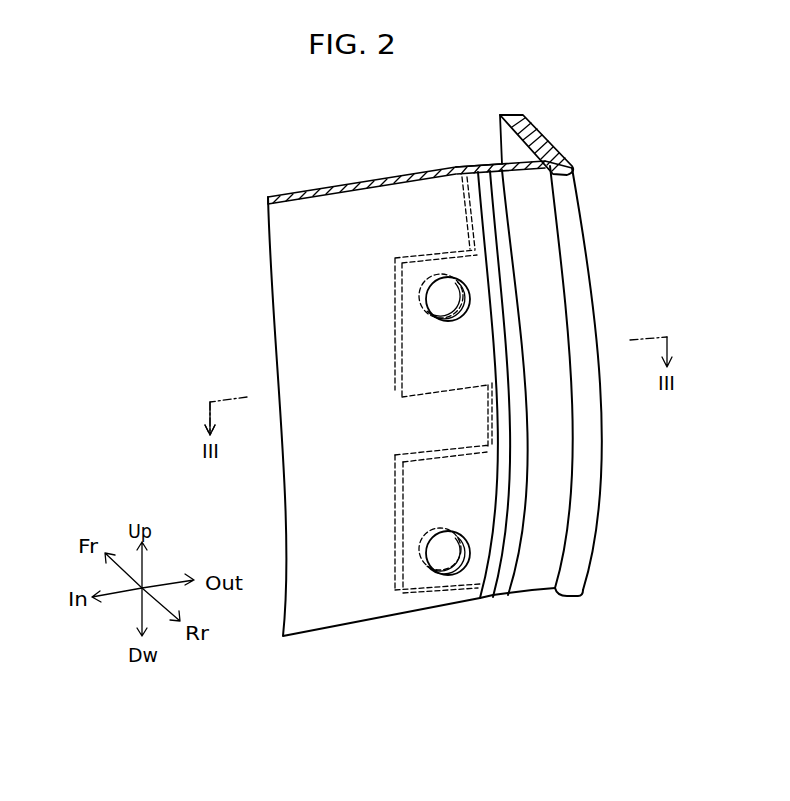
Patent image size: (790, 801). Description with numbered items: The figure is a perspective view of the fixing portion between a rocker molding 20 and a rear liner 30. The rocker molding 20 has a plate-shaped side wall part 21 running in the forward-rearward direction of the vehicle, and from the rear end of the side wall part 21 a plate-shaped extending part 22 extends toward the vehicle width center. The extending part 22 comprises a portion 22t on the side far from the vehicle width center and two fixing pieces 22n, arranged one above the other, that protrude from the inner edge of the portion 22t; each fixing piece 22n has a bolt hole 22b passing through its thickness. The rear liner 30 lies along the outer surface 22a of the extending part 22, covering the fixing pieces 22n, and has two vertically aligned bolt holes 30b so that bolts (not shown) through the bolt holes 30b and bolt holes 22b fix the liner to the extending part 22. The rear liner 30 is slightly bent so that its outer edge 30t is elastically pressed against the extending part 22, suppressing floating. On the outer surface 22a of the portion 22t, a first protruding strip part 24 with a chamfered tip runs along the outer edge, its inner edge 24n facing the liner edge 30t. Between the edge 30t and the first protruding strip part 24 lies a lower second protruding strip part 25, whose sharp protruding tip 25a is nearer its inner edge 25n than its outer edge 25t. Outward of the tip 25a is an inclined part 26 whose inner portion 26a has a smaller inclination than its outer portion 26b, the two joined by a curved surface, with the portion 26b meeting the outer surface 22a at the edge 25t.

The rocker molding 20 is at (543, 125).
The side wall part 21 is at (541, 144).
The extending part 22 is at (472, 169).
The outer surface 22a is at (489, 276).
The bolt hole 22b is at (419, 299).
The fixing piece 22n is at (393, 477).
The portion on the side far from the vehicle width center position 22t is at (548, 489).
The first protruding strip part 24 is at (588, 457).
The edge of the first protruding strip part 24n is at (568, 294).
The second protruding strip part 25 is at (540, 542).
The protruding tip 25a is at (531, 410).
The edge of the second protruding strip part 25n is at (480, 167).
The edge of the second protruding strip part 25t is at (519, 117).
The inclined part 26 is at (533, 589).
The portion of the inclined part on the vehicle width center side 26a is at (517, 597).
The portion of the inclined part on the side far from the vehicle width center posit 26b is at (551, 589).
The rear liner 30 is at (333, 208).
The bolt hole 30b is at (456, 322).
The edge of the rear liner 30t is at (475, 207).